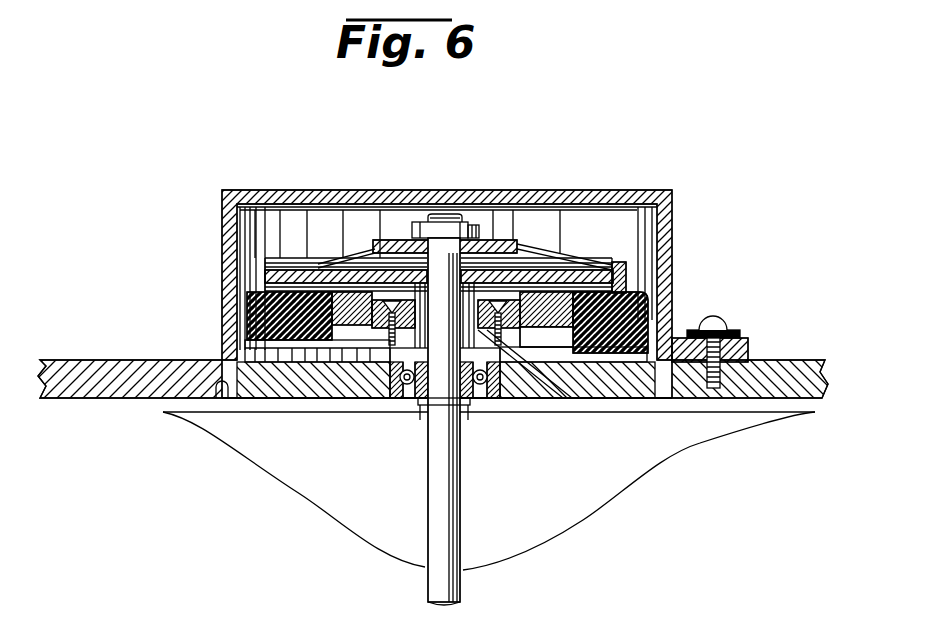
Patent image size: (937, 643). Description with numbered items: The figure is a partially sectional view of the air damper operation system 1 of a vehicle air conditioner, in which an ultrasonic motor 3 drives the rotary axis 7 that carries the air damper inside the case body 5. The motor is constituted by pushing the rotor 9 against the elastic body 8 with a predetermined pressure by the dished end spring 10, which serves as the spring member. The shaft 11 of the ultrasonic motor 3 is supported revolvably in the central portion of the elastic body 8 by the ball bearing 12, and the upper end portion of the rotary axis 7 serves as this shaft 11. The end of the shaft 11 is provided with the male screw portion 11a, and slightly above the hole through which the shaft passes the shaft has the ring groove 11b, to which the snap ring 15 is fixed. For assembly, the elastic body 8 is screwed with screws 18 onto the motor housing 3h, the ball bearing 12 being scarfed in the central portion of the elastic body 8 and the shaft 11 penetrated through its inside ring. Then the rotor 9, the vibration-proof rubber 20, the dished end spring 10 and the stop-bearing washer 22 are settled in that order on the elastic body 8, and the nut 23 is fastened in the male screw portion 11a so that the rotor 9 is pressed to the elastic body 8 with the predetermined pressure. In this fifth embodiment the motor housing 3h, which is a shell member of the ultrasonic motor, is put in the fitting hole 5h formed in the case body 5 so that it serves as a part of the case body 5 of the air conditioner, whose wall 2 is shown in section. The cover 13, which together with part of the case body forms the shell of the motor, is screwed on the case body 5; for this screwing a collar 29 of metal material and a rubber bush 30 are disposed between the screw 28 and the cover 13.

The rotary drive unit 1 is at (616, 156).
The mounting plate 2 is at (782, 360).
The ultrasonic motor 3 is at (222, 218).
The motor housing 3h is at (637, 403).
The case body 5 is at (117, 360).
The fitting hole 5h is at (223, 393).
The rotary axis 7 is at (433, 540).
The elastic body 8 is at (649, 298).
The rotor 9 is at (628, 272).
The dished end spring 10 is at (541, 252).
The shaft 11 is at (408, 233).
The male screw portion 11a is at (447, 217).
The ring groove 11b is at (462, 420).
The ball bearing 12 is at (397, 395).
The cover 13 is at (226, 272).
The snap ring 15 is at (488, 403).
The screw 18 is at (540, 360).
The vibration-proof rubber 20 is at (673, 194).
The stop-bearing washer 22 is at (503, 238).
The nut 23 is at (471, 233).
The screw 28 is at (740, 334).
The collar 29 is at (717, 318).
The rubber bush 30 is at (742, 333).